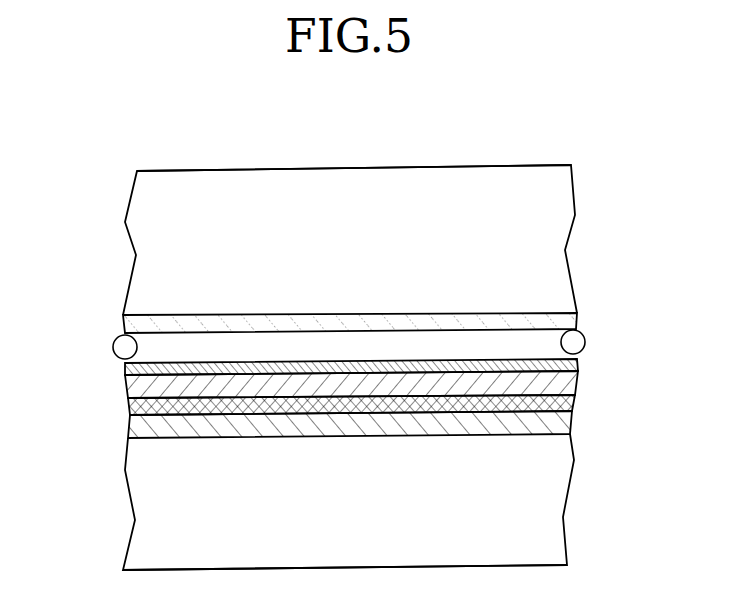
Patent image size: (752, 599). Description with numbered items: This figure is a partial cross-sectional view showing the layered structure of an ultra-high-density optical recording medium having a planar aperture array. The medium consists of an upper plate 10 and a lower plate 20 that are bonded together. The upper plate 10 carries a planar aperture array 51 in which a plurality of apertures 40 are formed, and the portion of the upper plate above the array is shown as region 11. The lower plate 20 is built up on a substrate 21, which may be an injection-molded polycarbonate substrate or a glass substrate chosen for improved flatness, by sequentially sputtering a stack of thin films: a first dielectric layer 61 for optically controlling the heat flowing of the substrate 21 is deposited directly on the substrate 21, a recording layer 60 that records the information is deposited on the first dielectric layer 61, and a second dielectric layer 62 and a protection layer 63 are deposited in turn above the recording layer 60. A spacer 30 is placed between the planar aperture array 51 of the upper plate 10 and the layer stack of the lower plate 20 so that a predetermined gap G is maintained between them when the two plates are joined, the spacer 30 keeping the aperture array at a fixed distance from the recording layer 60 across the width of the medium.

The upper plate 10 is at (575, 190).
The upper substrate body 11 is at (158, 197).
The lower plate 20 is at (565, 540).
The substrate 21 is at (160, 535).
The spacer 30 is at (577, 342).
The apertures 40 is at (475, 320).
The planar aperture array 51 is at (578, 321).
The recording layer 60 is at (364, 414).
The first dielectric layer 61 is at (560, 425).
The second dielectric layer 62 is at (568, 386).
The protection layer 63 is at (568, 365).
The gap G is at (188, 348).